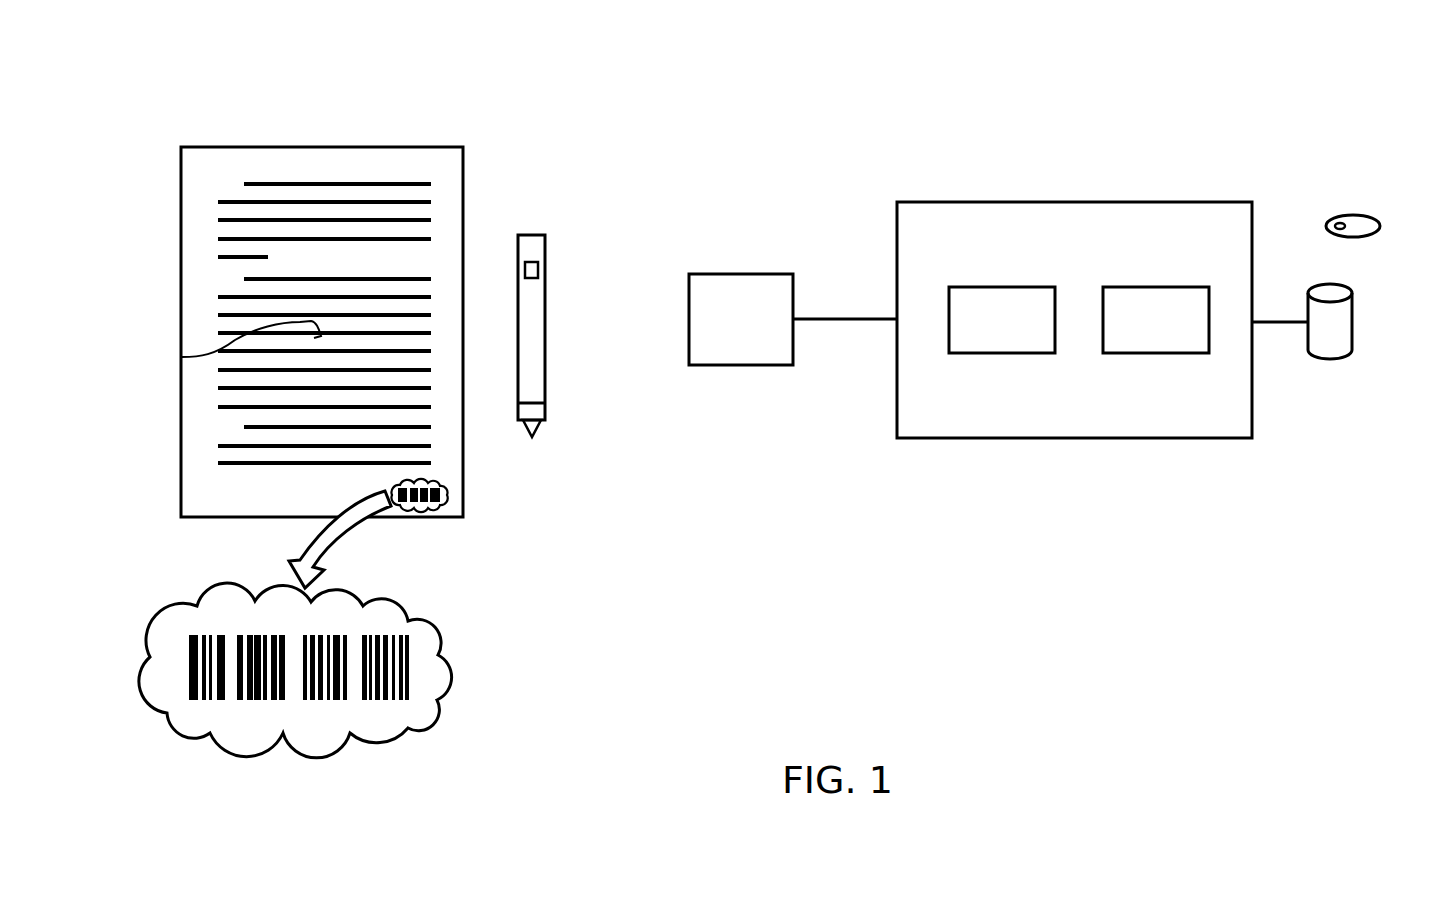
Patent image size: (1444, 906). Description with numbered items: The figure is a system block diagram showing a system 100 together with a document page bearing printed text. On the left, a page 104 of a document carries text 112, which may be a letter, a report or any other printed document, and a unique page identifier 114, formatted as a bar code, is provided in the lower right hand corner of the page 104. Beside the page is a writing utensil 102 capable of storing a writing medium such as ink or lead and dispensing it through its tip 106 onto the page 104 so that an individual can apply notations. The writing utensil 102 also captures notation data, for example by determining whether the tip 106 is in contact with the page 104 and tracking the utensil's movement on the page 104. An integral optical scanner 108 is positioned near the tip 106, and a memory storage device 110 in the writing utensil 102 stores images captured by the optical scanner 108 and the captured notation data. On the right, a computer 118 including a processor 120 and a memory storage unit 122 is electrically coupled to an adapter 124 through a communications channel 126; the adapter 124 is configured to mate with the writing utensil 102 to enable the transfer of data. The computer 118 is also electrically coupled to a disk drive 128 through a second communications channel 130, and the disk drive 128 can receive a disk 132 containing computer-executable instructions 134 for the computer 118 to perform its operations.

The system 100 is at (818, 93).
The writing utensil 102 is at (546, 246).
The page 104 is at (237, 162).
The tip 106 is at (540, 425).
The optical scanner 108 is at (546, 407).
The memory storage device 110 is at (532, 279).
The text 112 is at (183, 357).
The page identifier 114 is at (195, 603).
The computer 118 is at (940, 201).
The processor 120 is at (981, 328).
The memory storage unit 122 is at (1137, 328).
The adapter 124 is at (721, 328).
The communications channel 126 is at (855, 311).
The disk drive 128 is at (1353, 320).
The second communications channel 130 is at (1285, 312).
The disk 132 is at (1368, 216).
The computer-executable instructions 134 is at (1340, 221).